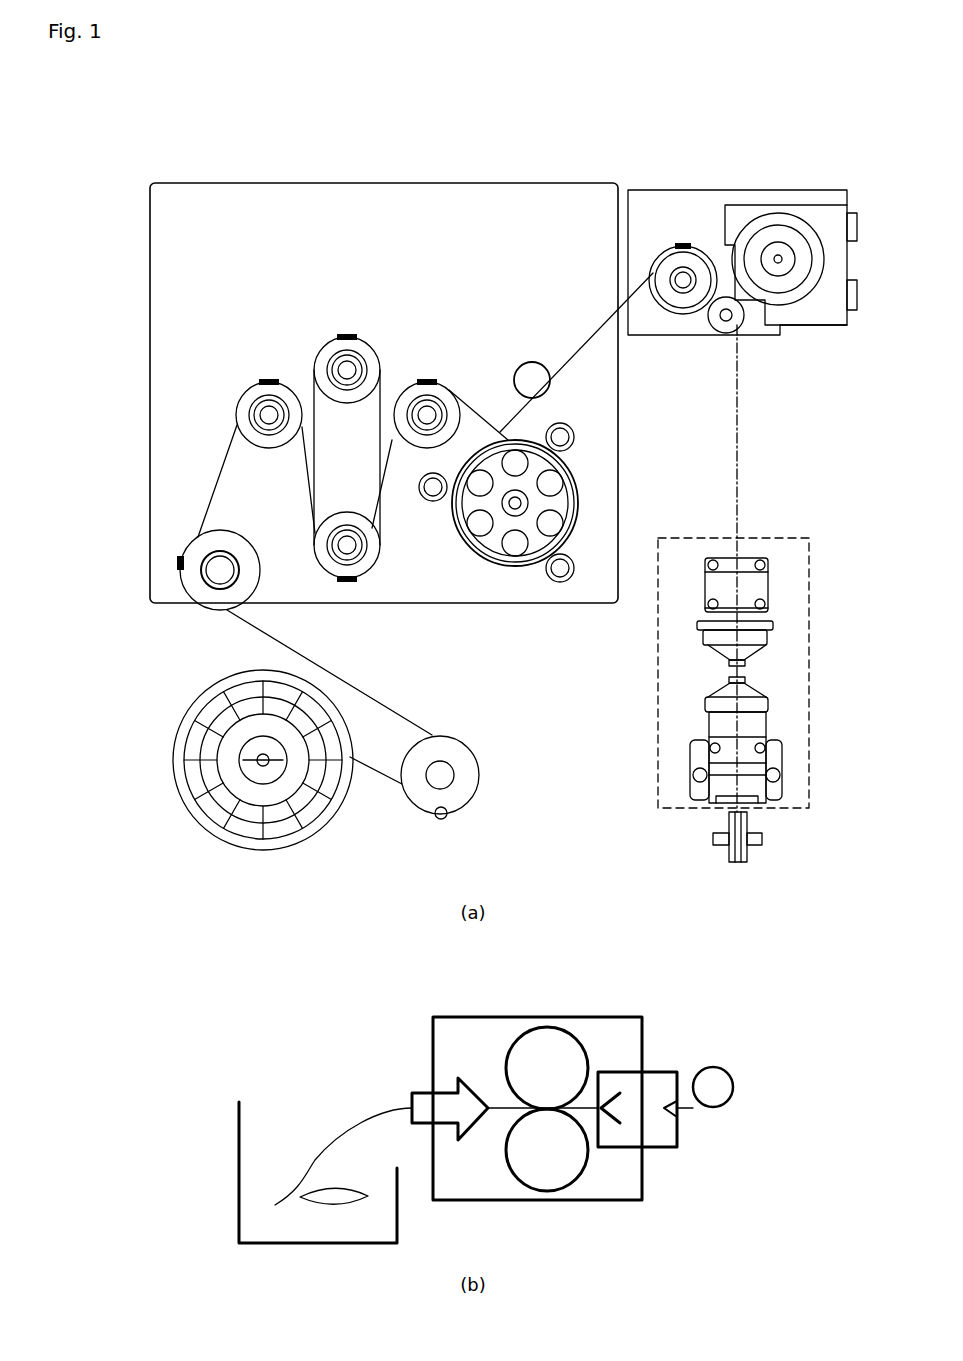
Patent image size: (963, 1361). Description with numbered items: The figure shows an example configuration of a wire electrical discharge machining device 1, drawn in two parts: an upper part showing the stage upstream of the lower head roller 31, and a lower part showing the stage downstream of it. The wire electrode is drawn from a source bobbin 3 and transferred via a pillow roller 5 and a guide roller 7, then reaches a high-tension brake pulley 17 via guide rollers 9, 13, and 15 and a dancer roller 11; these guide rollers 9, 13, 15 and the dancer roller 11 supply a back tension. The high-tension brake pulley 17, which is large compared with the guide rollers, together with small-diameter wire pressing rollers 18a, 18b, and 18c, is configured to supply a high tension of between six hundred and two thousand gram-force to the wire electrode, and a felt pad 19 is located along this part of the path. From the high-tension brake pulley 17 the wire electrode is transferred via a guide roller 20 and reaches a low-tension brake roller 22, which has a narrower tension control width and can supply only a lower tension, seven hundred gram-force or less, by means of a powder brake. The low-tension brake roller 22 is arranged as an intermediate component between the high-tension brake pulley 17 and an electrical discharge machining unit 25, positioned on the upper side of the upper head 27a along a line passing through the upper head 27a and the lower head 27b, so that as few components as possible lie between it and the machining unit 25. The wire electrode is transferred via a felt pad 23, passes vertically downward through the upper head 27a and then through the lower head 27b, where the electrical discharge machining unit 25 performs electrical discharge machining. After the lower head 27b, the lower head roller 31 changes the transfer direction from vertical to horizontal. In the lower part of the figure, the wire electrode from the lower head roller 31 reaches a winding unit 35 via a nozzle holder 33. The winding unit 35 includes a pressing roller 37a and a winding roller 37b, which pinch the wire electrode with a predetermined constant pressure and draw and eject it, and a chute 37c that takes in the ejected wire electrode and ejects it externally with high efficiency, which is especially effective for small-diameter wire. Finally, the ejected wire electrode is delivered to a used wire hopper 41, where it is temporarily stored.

The wire electrical discharge machining device 1 is at (752, 118).
The source bobbin 3 is at (193, 812).
The pillow roller 5 is at (480, 762).
The guide roller 7 is at (187, 587).
The guide roller 9 is at (242, 398).
The dancer roller 11 is at (370, 574).
The guide roller 13 is at (318, 355).
The guide roller 15 is at (394, 392).
The high-tension brake pulley 17 is at (490, 563).
The small-diameter wire pressing roller 18a is at (556, 583).
The small-diameter wire pressing roller 18b is at (575, 438).
The small-diameter wire pressing roller 18c is at (427, 503).
The felt pad 19 is at (523, 366).
The guide roller 20 is at (664, 262).
The low-tension brake roller 22 is at (825, 258).
The felt pad 23 is at (708, 324).
The electrical discharge machining unit 25 is at (778, 536).
The upper head 27a is at (768, 593).
The lower head 27b is at (768, 717).
The lower head roller 31 is at (750, 822).
The nozzle holder 33 is at (655, 1148).
The winding unit 35 is at (561, 1016).
The pressing roller 37a is at (513, 1038).
The winding roller 37b is at (564, 1190).
The chute 37c is at (425, 1090).
The used wire hopper 41 is at (237, 1163).